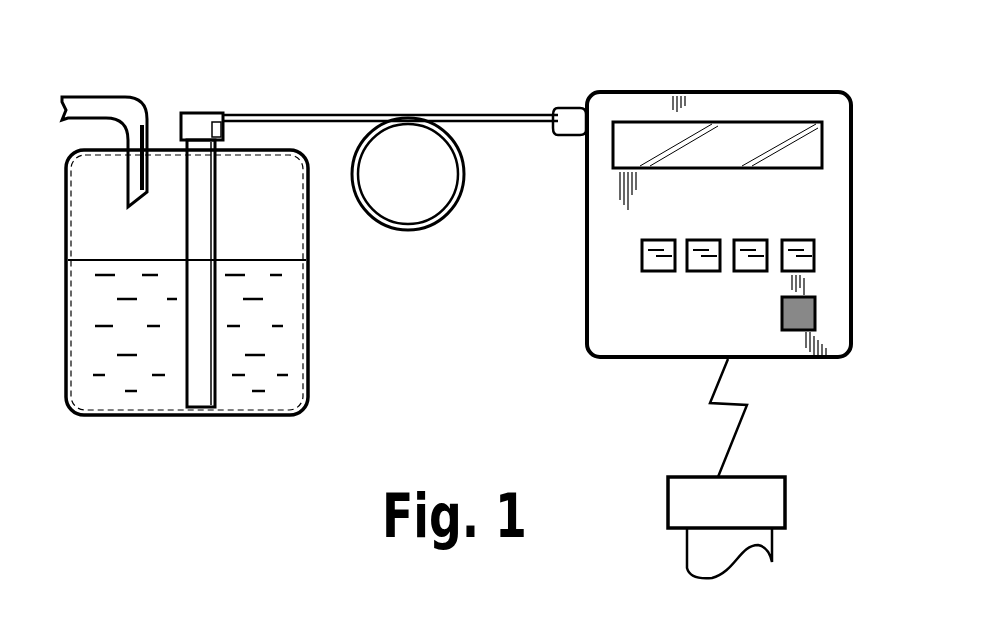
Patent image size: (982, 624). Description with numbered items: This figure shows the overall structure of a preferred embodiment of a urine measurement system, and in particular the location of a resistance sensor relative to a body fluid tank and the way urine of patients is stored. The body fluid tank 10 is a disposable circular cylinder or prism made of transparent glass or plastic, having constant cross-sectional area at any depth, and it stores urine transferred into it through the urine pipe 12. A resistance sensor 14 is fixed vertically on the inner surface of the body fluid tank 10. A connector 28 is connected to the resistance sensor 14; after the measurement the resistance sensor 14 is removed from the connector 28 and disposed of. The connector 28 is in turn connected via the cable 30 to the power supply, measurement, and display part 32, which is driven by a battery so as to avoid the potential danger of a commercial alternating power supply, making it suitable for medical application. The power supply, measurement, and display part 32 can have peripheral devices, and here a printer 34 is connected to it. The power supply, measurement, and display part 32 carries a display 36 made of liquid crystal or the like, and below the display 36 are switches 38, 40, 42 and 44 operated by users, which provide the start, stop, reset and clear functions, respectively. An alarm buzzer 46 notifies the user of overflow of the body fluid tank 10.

The body fluid tank 10 is at (128, 418).
The urine pipe 12 is at (114, 100).
The resistance sensor 14 is at (200, 232).
The connector 28 is at (198, 124).
The cable 30 is at (470, 112).
The power supply, measurement, and display part 32 is at (657, 92).
The printer 34 is at (785, 510).
The display 36 is at (780, 128).
The switch 38 is at (656, 272).
The switch 40 is at (700, 272).
The switch 42 is at (749, 272).
The switch 44 is at (814, 258).
The alarm buzzer 46 is at (815, 316).